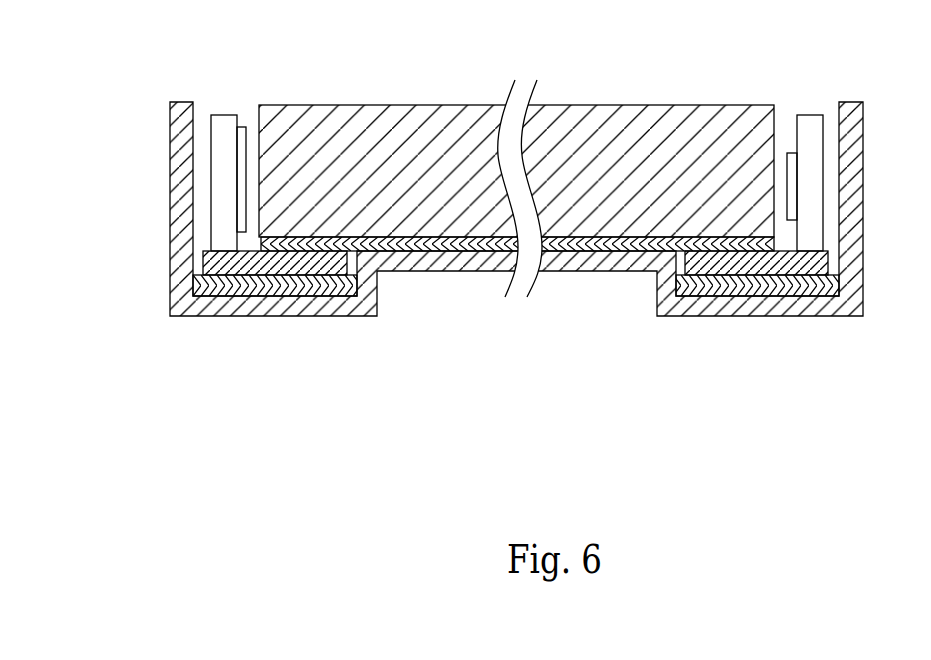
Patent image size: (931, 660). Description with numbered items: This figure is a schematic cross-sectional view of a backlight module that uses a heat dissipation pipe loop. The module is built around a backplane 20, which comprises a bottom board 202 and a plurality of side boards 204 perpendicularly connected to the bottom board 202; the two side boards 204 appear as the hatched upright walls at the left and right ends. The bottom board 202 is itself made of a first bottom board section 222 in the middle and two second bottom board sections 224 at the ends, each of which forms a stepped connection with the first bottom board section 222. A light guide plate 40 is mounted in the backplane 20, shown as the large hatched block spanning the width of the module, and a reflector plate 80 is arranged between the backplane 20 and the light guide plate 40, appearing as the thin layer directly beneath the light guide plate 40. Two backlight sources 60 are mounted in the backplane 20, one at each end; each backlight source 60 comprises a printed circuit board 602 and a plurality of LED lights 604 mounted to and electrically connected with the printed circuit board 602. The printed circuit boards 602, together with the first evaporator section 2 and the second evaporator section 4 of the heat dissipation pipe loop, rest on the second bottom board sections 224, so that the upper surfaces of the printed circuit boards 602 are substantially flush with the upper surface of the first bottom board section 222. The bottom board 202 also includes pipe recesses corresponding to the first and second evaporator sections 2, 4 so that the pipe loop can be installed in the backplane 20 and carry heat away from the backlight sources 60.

The first evaporator section 2 is at (218, 287).
The second evaporator section 4 is at (803, 292).
The backplane 20 is at (489, 256).
The bottom board 202 is at (516, 330).
The side board 204 is at (183, 243).
The first bottom board section 222 is at (514, 306).
The second bottom board section 224 is at (252, 308).
The light guide plate 40 is at (393, 142).
The backlight source 60 is at (436, 195).
The printed circuit board 602 is at (228, 262).
The LED light 604 is at (223, 175).
The reflector plate 80 is at (353, 243).